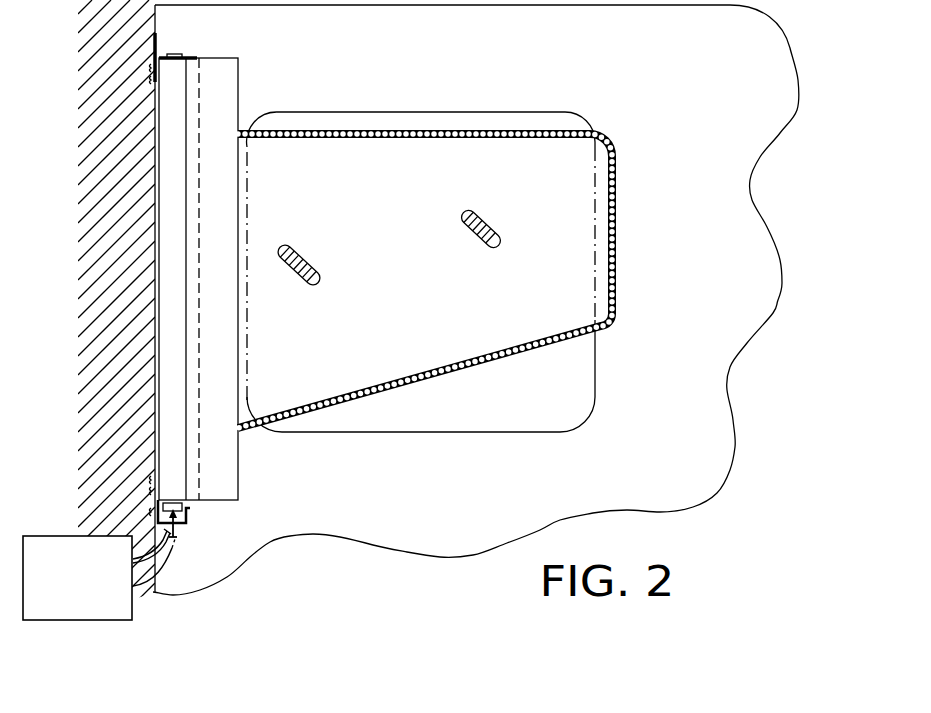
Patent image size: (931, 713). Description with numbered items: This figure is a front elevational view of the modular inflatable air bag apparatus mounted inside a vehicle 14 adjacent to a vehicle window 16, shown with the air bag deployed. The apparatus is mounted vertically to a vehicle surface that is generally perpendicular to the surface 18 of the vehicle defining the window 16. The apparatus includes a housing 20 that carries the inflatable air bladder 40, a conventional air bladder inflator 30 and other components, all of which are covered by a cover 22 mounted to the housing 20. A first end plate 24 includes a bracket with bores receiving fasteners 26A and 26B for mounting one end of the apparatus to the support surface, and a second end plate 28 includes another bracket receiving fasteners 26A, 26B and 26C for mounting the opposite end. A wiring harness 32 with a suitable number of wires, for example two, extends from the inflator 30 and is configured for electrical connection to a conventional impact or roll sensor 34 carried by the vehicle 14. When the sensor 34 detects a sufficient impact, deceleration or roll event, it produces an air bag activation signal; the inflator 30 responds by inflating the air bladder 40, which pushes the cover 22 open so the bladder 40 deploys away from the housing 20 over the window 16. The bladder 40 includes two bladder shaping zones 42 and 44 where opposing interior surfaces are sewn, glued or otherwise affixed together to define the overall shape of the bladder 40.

The vehicle 14 is at (786, 44).
The vehicle window 16 is at (597, 367).
The surface 18 is at (665, 112).
The housing 20 is at (174, 142).
The cover 22 is at (239, 80).
The first end plate 24 is at (188, 57).
The fastener 26A is at (152, 68).
The fastener 26B is at (150, 77).
The fastener 26C is at (153, 512).
The second end plate 28 is at (188, 521).
The air bladder inflator 30 is at (188, 509).
The wiring harness 32 is at (178, 570).
The impact or roll sensor 34 is at (69, 621).
The air bladder 40 is at (381, 256).
The bladder shaping zone 42 is at (282, 243).
The bladder shaping zone 44 is at (491, 250).